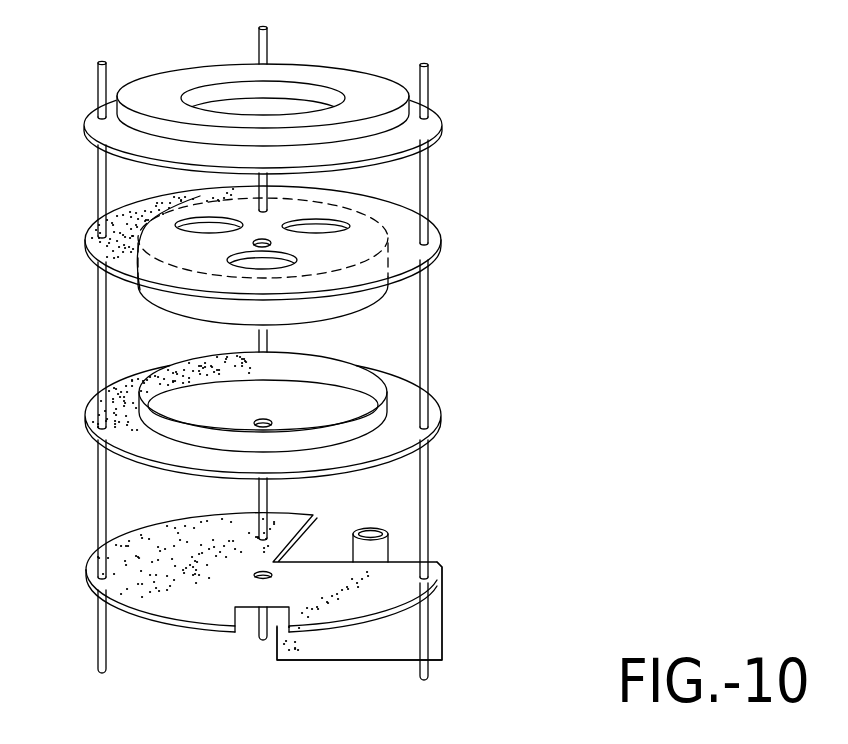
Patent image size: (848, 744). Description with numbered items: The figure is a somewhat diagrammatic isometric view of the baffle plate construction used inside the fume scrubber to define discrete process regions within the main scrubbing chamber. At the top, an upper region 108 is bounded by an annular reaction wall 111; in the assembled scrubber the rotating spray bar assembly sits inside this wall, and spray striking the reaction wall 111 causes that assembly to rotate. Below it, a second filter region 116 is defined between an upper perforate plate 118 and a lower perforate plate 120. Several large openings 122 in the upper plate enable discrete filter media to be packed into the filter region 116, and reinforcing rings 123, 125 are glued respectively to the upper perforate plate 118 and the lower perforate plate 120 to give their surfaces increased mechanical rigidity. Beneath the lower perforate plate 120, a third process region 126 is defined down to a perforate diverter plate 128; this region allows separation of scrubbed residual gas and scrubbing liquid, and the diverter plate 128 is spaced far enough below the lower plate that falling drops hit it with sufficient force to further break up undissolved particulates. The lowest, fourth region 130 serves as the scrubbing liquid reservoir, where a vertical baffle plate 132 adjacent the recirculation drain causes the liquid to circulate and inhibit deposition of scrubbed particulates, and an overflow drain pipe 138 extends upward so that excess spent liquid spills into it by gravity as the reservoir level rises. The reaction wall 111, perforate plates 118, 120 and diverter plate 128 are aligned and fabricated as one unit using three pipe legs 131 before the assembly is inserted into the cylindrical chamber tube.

The upper region 108 is at (222, 76).
The annular reaction wall 111 is at (362, 88).
The second filter region 116 is at (395, 313).
The upper perforate plate 118 is at (86, 243).
The lower perforate plate 120 is at (327, 403).
The large openings 122 is at (250, 323).
The reinforcing ring 123 is at (158, 297).
The reinforcing ring 125 is at (311, 366).
The third process region 126 is at (155, 508).
The perforate diverter plate 128 is at (142, 566).
The fourth region 130 is at (197, 658).
The pipe legs 131 is at (97, 76).
The vertical baffle plate 132 is at (437, 620).
The overflow drain pipe 138 is at (383, 545).